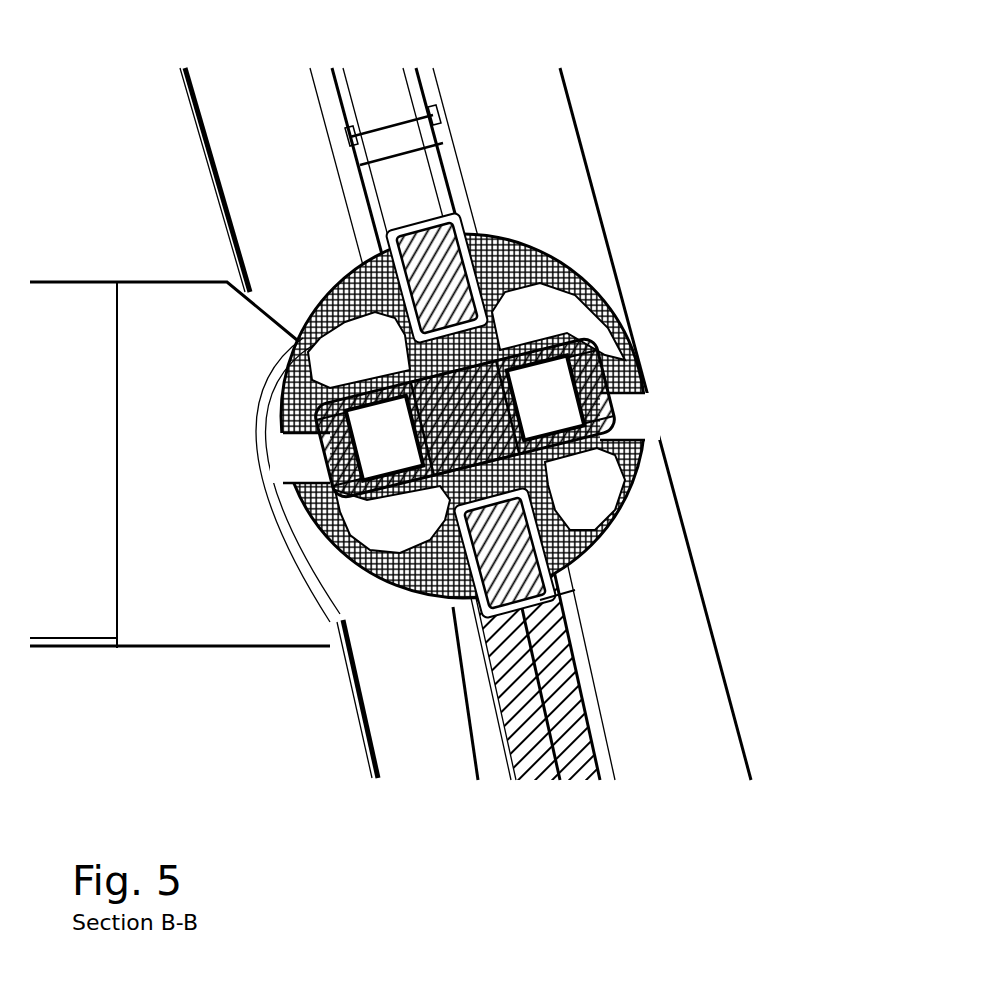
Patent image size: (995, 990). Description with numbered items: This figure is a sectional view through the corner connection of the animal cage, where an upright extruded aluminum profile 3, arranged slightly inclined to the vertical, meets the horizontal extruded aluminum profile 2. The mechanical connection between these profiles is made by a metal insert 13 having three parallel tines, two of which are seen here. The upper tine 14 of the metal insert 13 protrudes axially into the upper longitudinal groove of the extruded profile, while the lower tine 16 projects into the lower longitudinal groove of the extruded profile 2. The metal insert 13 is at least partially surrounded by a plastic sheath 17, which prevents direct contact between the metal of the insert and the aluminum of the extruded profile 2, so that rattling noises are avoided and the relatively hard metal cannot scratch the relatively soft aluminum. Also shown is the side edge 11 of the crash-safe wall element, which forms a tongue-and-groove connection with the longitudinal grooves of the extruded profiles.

The extruded aluminum profile 2 is at (563, 253).
The extruded aluminum profile 3 is at (517, 112).
The side edge 11 is at (550, 663).
The metal insert 13 is at (550, 592).
The upper tine 14 is at (427, 273).
The lower tine 16 is at (475, 605).
The plastic sheath 17 is at (578, 340).